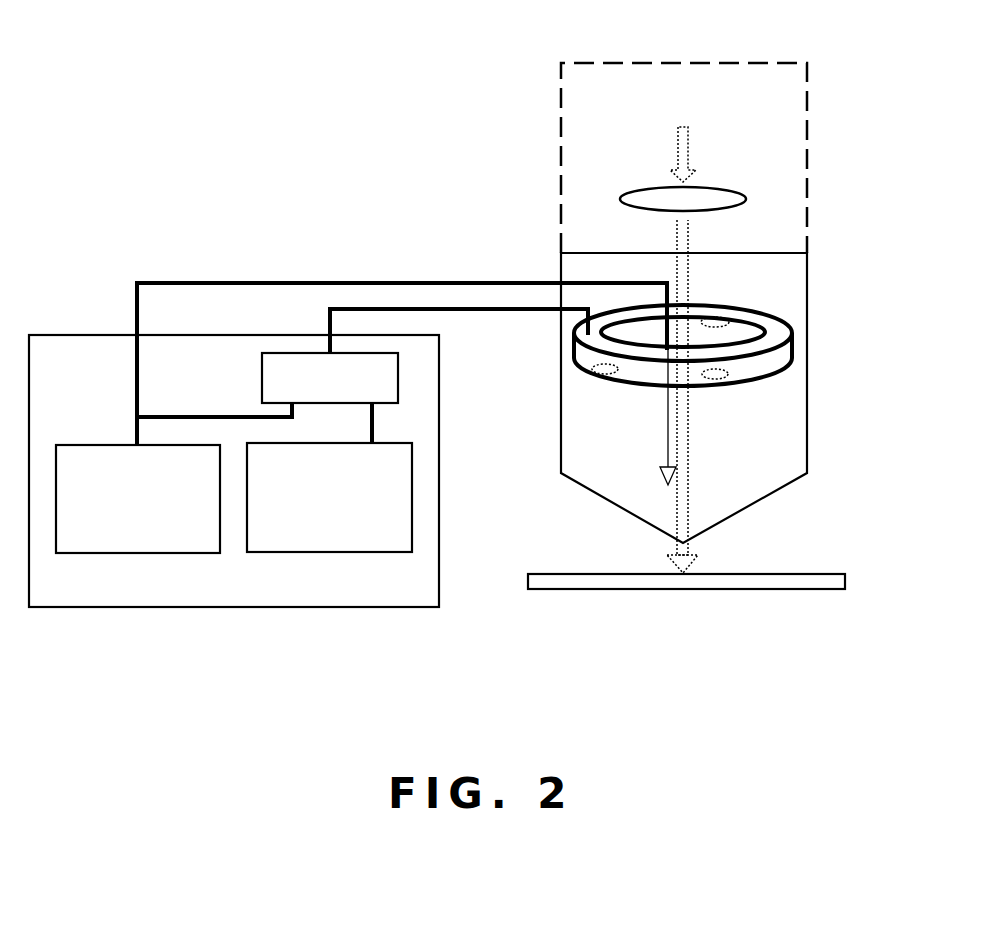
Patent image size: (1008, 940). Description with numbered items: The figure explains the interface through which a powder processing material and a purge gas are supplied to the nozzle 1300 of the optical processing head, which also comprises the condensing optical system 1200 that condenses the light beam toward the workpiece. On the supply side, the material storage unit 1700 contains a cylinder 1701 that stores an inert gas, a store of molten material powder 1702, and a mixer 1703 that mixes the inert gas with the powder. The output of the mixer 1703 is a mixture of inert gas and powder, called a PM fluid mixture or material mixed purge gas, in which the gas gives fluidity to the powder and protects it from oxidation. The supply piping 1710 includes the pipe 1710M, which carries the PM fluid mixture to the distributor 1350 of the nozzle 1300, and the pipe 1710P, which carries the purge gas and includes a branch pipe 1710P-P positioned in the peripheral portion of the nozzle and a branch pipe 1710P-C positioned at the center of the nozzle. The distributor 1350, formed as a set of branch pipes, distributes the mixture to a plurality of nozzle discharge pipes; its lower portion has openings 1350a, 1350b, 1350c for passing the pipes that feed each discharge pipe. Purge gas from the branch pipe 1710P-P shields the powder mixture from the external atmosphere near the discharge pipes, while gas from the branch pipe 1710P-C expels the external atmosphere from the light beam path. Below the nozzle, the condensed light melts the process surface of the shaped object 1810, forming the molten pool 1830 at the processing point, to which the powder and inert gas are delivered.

The condensing optical system 1200 is at (561, 101).
The nozzle 1300 is at (792, 483).
The distributor 1350 is at (792, 352).
The opening 1350a is at (730, 322).
The opening 1350b is at (592, 369).
The opening 1350c is at (728, 374).
The material storage unit 1700 is at (197, 607).
The cylinder 1701 is at (120, 553).
The molten material powder 1702 is at (332, 552).
The mixer 1703 is at (398, 377).
The pipe 1710 is at (317, 128).
The pipe 1710P is at (355, 283).
The branch pipe 1710P-C is at (667, 305).
The branch pipe 1710P-P is at (590, 285).
The pipe 1710M is at (510, 307).
The shaped object 1810 is at (817, 589).
The molten pool (processing point) 1830 is at (683, 574).